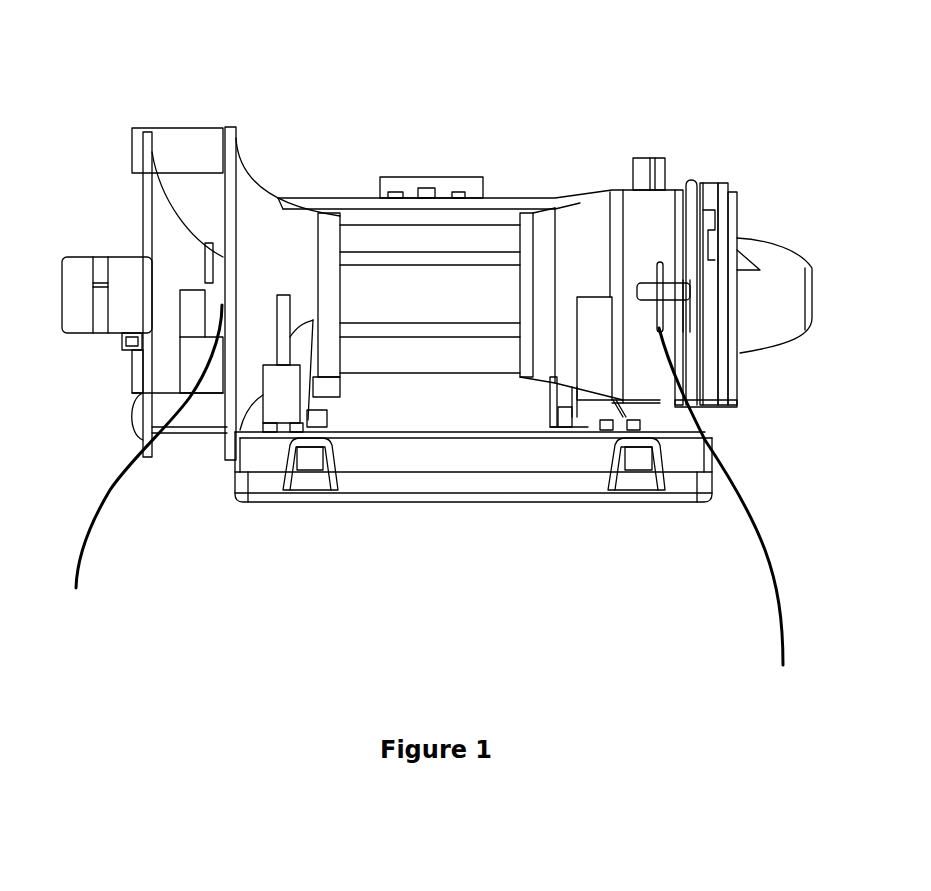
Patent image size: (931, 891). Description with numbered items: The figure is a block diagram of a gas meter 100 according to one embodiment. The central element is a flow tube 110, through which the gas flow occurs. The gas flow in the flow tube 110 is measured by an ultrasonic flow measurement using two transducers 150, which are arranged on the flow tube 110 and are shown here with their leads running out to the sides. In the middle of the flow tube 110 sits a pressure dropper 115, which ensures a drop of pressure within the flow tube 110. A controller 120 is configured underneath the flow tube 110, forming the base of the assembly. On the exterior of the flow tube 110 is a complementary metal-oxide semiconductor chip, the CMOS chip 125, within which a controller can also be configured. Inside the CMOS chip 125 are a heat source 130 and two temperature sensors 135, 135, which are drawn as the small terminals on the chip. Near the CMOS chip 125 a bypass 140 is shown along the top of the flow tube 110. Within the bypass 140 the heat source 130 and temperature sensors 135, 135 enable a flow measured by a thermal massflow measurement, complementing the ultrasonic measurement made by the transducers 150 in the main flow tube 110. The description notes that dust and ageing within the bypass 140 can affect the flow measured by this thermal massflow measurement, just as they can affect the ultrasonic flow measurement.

The gas meter 100 is at (366, 33).
The flow tube 110 is at (447, 337).
The pressure dropper 115 is at (408, 348).
The controller 120 is at (608, 503).
The CMOS chip 125 is at (440, 177).
The heat source 130 is at (428, 188).
The temperature sensors 135 is at (393, 192).
The bypass 140 is at (330, 197).
The transducers 150 is at (434, 502).